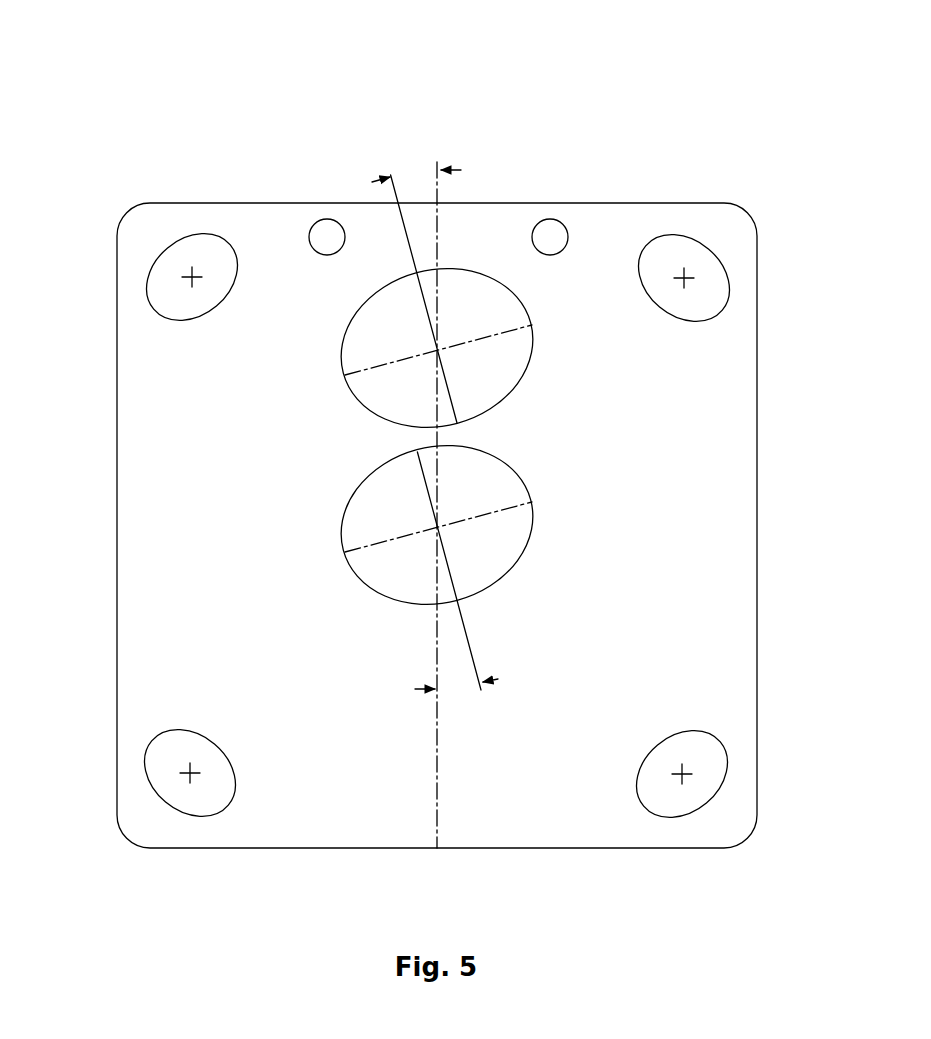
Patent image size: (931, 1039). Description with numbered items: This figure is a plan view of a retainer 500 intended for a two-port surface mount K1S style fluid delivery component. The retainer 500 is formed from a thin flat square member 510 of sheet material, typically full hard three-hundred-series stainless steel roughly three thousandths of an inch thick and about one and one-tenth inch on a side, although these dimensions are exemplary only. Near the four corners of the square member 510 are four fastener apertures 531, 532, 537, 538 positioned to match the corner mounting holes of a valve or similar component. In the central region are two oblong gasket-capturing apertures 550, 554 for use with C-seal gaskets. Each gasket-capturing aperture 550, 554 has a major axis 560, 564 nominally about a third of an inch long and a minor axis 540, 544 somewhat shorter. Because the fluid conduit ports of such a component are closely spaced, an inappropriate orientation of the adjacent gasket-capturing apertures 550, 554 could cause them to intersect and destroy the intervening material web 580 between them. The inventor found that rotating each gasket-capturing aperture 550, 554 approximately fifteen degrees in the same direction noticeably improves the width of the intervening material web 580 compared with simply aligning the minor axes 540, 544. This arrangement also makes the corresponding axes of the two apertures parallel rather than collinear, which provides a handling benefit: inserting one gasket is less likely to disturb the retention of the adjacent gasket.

The retainer 500 is at (479, 447).
The thin flat square member 510 is at (712, 618).
The fastener aperture 531 is at (712, 250).
The fastener aperture 532 is at (158, 252).
The fastener aperture 537 is at (160, 798).
The fastener aperture 538 is at (705, 810).
The minor axis 540 is at (418, 304).
The minor axis 544 is at (422, 475).
The gasket-capturing aperture 550 is at (535, 338).
The gasket-capturing aperture 554 is at (533, 510).
The major axis 560 is at (393, 362).
The major axis 564 is at (394, 540).
The intervening material web 580 is at (450, 435).